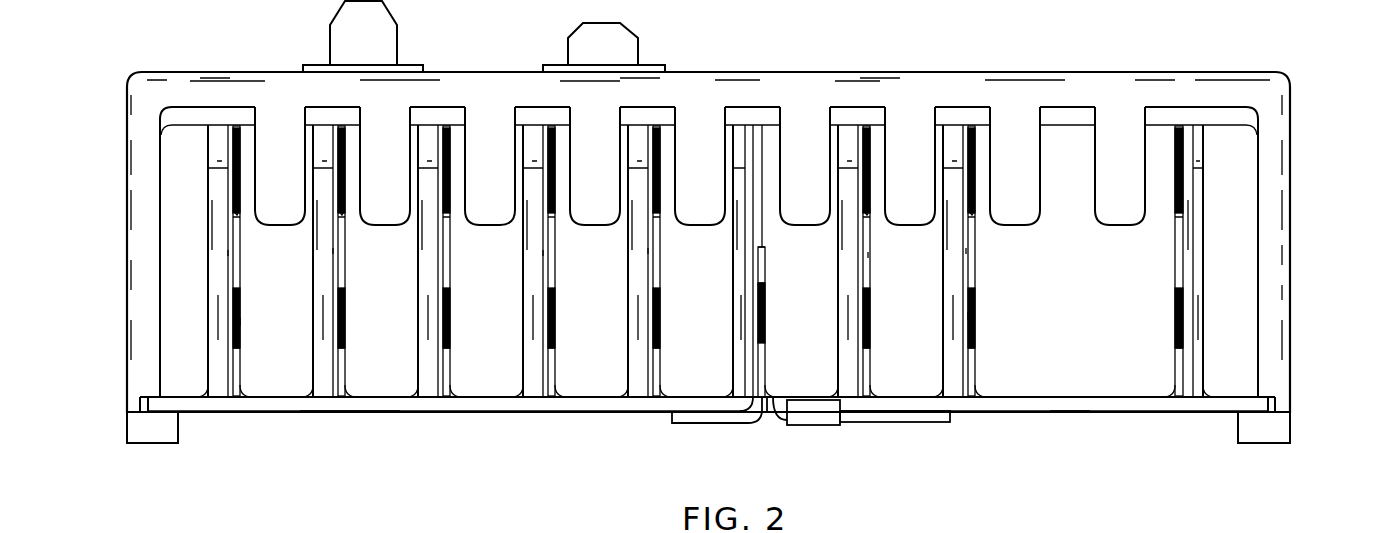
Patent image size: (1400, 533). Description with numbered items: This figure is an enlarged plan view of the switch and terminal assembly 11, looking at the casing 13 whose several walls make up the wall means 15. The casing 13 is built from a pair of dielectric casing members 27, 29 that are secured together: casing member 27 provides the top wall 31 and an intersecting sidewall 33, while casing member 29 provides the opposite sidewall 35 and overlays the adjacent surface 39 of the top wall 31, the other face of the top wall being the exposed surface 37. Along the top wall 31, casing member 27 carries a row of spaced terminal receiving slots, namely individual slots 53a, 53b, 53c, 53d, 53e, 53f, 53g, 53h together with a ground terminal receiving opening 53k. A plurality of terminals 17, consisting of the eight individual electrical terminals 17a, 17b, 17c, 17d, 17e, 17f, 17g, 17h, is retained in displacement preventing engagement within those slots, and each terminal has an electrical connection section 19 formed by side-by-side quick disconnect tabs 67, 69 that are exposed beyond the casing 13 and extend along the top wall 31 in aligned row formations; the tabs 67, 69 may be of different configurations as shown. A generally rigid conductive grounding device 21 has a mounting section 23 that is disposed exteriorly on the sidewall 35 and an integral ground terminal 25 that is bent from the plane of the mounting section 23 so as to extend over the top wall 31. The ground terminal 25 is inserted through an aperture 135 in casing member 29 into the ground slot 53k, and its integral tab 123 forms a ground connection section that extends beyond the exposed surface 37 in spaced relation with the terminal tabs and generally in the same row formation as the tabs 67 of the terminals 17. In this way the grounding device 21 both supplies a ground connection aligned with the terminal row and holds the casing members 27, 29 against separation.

The switch and terminal assembly 11 is at (1333, 145).
The casing 13 is at (1308, 275).
The wall means 15 is at (1283, 239).
The terminals 17 is at (345, 422).
The electrical terminal 17a is at (233, 372).
The electrical terminal 17b is at (338, 372).
The electrical terminal 17c is at (443, 372).
The electrical terminal 17d is at (548, 372).
The electrical terminal 17e is at (653, 372).
The electrical terminal 17f is at (863, 372).
The electrical terminal 17g is at (968, 372).
The electrical terminal 17h is at (1175, 372).
The electrical connection section 19 is at (333, 250).
The grounding device 21 is at (672, 428).
The mounting section 23 is at (886, 420).
The ground terminal 25 is at (762, 268).
The casing member 27 is at (1283, 297).
The casing member 29 is at (1065, 402).
The top wall 31 is at (1243, 365).
The sidewall 33 is at (1115, 90).
The sidewall 35 is at (478, 400).
The exposed surface 37 is at (1072, 291).
The adjacent surface 39 is at (1018, 398).
The slot 53a is at (208, 266).
The slot 53b is at (313, 277).
The slot 53c is at (418, 277).
The slot 53d is at (523, 277).
The slot 53e is at (628, 277).
The slot 53f is at (838, 277).
The slot 53g is at (943, 277).
The slot 53h is at (1203, 258).
The ground terminal receiving opening 53k is at (733, 277).
The tab 67 is at (340, 316).
The tab 69 is at (342, 183).
The tab 123 is at (758, 320).
The aperture 135 is at (781, 427).